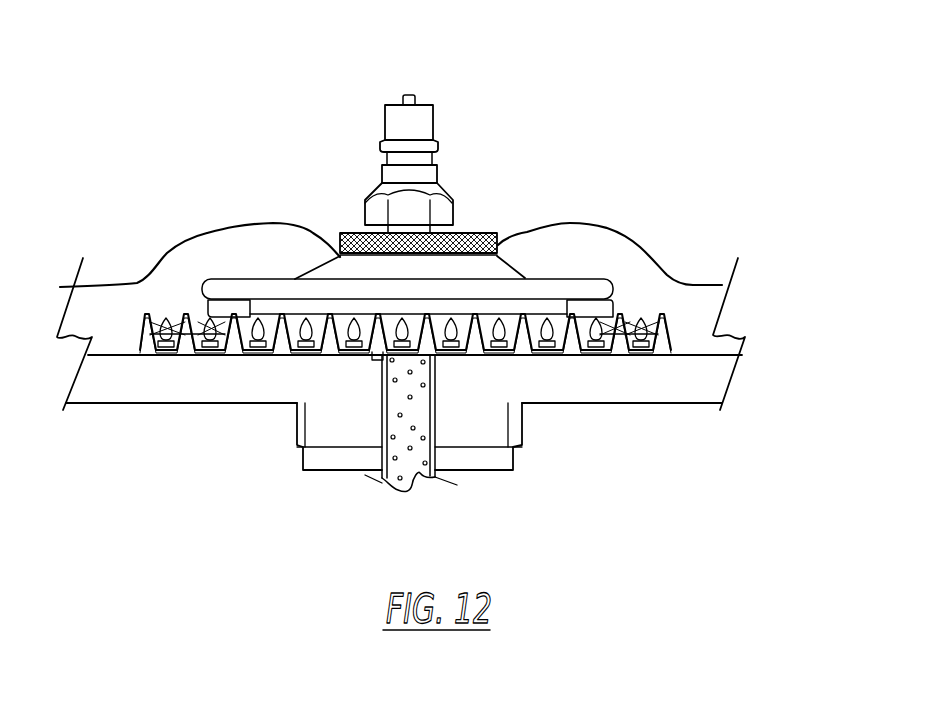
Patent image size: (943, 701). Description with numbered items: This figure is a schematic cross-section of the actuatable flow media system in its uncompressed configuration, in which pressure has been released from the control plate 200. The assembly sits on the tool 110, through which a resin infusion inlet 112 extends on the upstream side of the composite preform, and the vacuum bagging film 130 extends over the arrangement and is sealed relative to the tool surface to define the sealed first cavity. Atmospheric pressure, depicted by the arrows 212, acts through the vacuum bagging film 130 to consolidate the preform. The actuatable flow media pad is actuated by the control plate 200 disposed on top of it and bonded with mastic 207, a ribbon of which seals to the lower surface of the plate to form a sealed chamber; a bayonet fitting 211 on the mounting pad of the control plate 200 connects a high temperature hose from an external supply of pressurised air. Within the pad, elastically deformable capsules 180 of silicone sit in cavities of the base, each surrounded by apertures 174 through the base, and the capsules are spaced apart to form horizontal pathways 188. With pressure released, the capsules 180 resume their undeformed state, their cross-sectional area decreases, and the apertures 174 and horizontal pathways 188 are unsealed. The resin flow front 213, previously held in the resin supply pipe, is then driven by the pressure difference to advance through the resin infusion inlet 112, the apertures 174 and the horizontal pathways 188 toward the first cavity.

The tool 110 is at (147, 395).
The resin infusion inlet 112 is at (437, 458).
The vacuum bagging film 130 is at (705, 280).
The apertures 174 is at (522, 405).
The elastically deformable capsule 180 is at (518, 355).
The horizontal pathways 188 is at (405, 358).
The control plate 200 is at (270, 285).
The mastic 207 is at (597, 300).
The bayonet fitting 211 is at (435, 113).
The atmospheric pressure arrows 212 is at (740, 193).
The resin flow front 213 is at (380, 345).